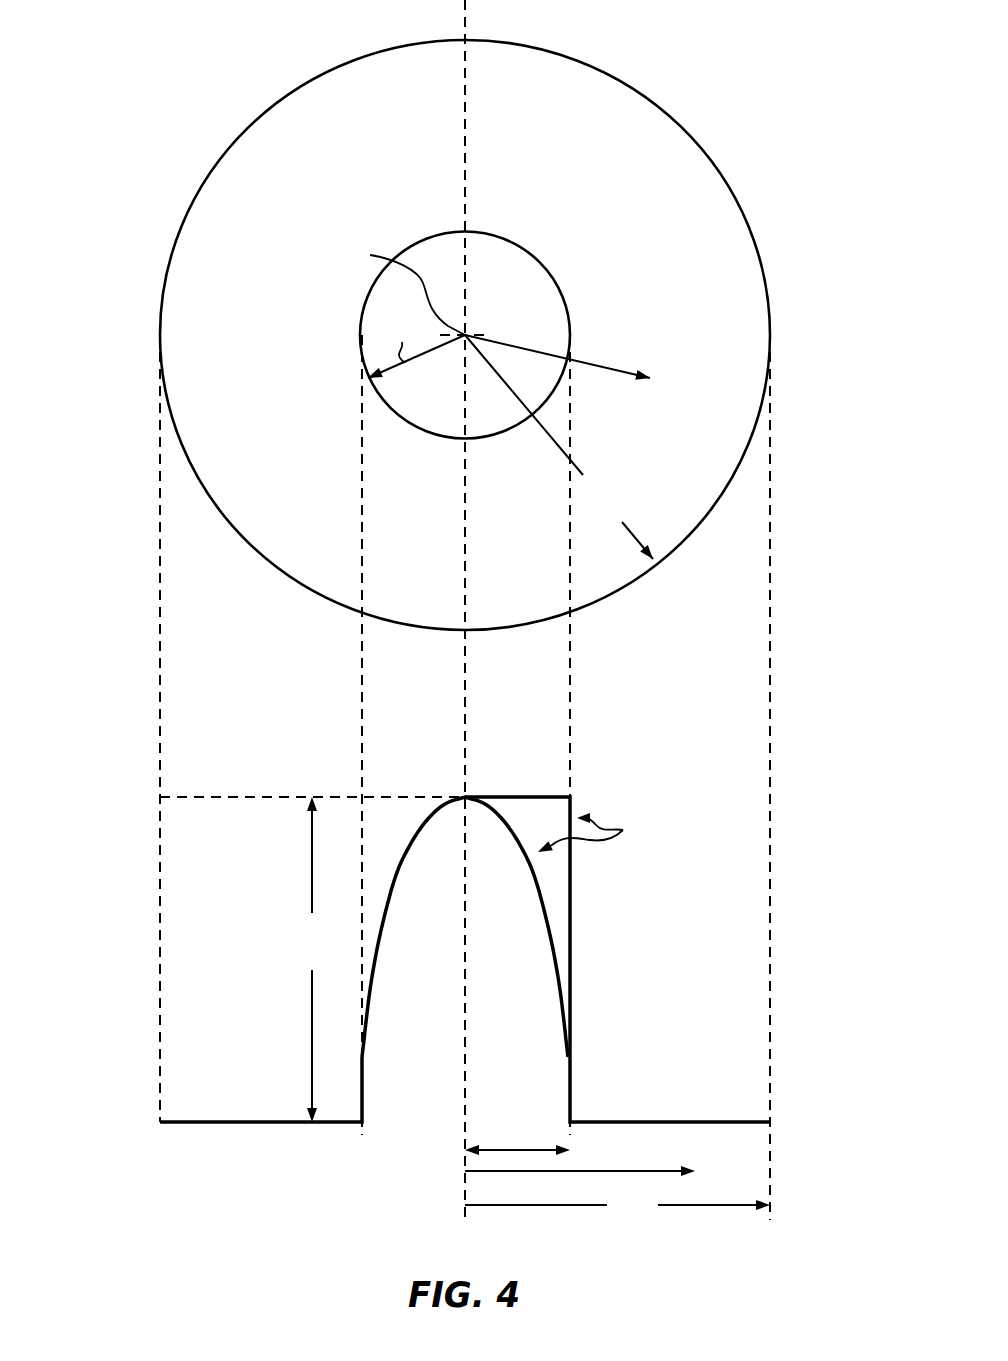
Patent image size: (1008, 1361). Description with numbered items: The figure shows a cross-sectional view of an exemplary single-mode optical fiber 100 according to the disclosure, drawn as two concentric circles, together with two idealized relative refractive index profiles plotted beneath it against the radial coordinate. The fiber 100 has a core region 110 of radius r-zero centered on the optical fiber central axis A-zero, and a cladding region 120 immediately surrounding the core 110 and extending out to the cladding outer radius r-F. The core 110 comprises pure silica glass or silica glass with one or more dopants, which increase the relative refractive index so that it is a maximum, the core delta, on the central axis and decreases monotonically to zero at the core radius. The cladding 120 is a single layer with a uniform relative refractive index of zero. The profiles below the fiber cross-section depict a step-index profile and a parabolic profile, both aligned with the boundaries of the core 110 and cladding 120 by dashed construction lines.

The single-mode optical fiber 100 is at (182, 84).
The core region 110 is at (553, 312).
The cladding region 120 is at (640, 180).